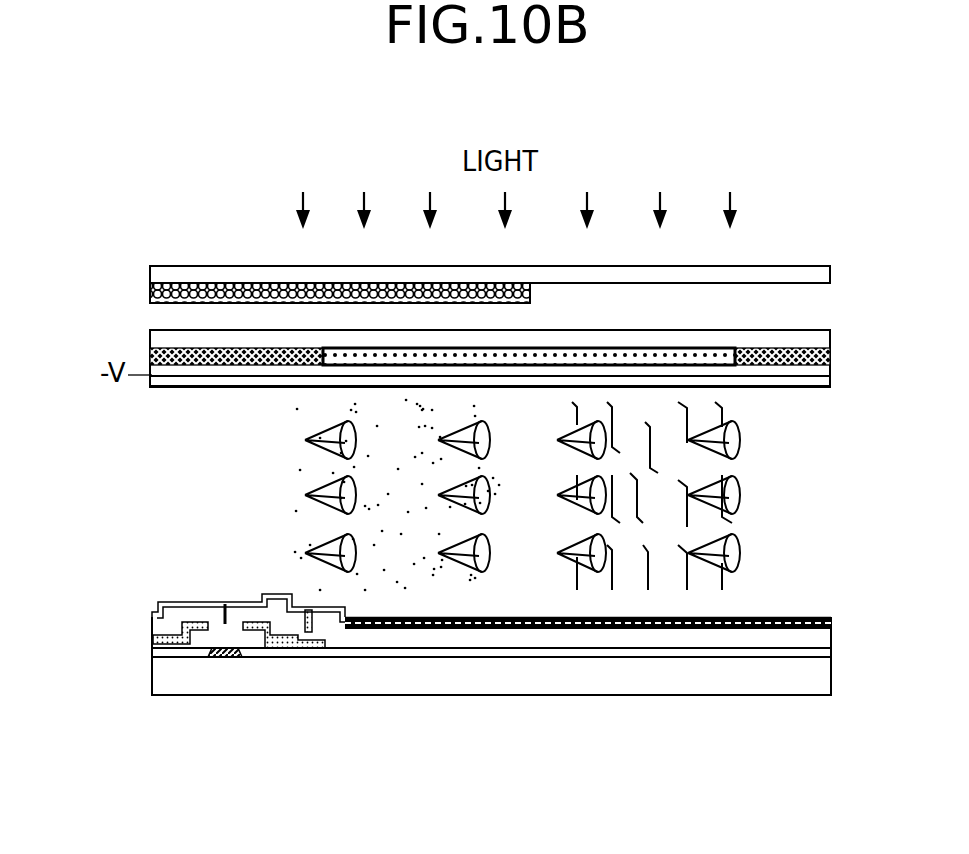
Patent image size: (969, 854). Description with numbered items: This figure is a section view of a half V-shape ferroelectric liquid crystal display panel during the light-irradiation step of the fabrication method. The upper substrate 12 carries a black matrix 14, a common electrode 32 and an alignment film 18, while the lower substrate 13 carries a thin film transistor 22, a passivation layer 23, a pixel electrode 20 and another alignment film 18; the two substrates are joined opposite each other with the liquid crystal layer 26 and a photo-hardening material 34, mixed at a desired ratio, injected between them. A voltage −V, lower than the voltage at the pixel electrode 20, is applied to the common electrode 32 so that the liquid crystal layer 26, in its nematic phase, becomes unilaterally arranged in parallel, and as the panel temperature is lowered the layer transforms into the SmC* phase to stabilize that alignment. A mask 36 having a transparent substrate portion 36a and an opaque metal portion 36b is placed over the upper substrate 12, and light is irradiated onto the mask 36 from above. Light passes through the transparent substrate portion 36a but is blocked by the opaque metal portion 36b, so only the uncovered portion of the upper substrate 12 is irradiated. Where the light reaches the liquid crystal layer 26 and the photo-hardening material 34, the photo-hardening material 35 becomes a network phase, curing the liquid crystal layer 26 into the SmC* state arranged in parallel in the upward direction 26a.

The upper substrate 12 is at (767, 338).
The lower substrate 13 is at (808, 687).
The black matrix 14 is at (832, 352).
The alignment film 18 is at (821, 387).
The pixel electrode 20 is at (832, 622).
The thin film transistor 22 is at (142, 636).
The passivation layer 23 is at (822, 636).
The liquid crystal layer 26 is at (780, 448).
The stable state arranged in an upward direction 26a is at (307, 497).
The common electrode 32 is at (822, 375).
The photo-hardening material 34 is at (303, 437).
The photo-hardening material in network phase 35 is at (687, 417).
The mask 36 is at (63, 243).
The transparent substrate portion 36a is at (153, 278).
The opaque metal portion 36b is at (153, 293).